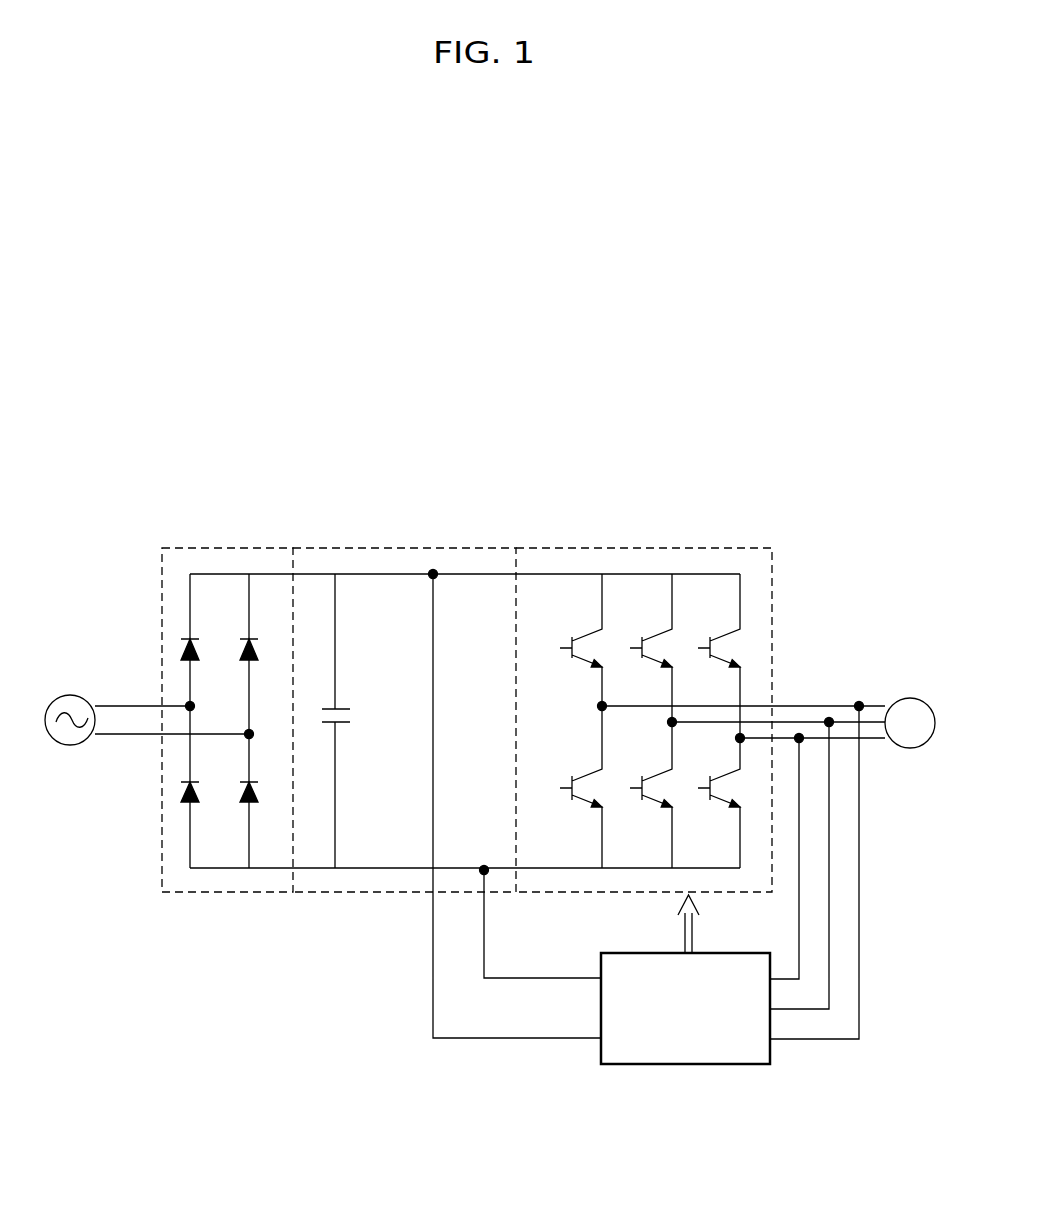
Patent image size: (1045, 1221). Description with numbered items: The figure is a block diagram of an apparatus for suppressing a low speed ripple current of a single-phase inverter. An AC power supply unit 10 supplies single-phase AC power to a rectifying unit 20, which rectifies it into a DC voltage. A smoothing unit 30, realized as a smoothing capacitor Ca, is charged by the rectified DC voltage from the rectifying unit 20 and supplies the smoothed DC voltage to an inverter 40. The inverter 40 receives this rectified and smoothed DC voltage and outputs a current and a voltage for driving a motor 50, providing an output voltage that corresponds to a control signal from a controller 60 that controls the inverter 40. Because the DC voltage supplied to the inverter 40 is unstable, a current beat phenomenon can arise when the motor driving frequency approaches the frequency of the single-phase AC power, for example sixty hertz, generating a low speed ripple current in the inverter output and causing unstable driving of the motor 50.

The AC power supply unit 10 is at (70, 696).
The rectifying unit 20 is at (220, 548).
The smoothing unit 30 is at (375, 548).
The inverter 40 is at (658, 548).
The motor 50 is at (913, 698).
The controller 60 is at (720, 1066).